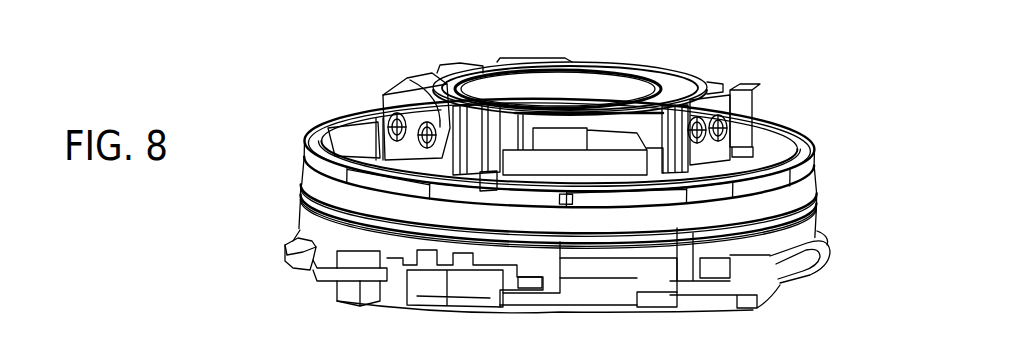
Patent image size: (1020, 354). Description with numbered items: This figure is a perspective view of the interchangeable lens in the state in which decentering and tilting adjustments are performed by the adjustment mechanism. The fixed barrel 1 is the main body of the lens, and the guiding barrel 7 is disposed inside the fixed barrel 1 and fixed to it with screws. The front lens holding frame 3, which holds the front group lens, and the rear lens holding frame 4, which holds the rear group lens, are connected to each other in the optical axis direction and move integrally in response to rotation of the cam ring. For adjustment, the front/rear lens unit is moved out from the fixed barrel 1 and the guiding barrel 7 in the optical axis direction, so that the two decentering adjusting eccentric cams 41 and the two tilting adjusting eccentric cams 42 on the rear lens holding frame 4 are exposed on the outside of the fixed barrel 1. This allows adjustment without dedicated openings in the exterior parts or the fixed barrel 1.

The fixed barrel 1 is at (812, 130).
The front lens holding frame 3 is at (662, 66).
The rear lens holding frame 4 is at (478, 172).
The guiding barrel 7 is at (325, 128).
The decentering adjusting eccentric cam 41 is at (382, 112).
The tilting adjusting eccentric cam 42 is at (433, 125).